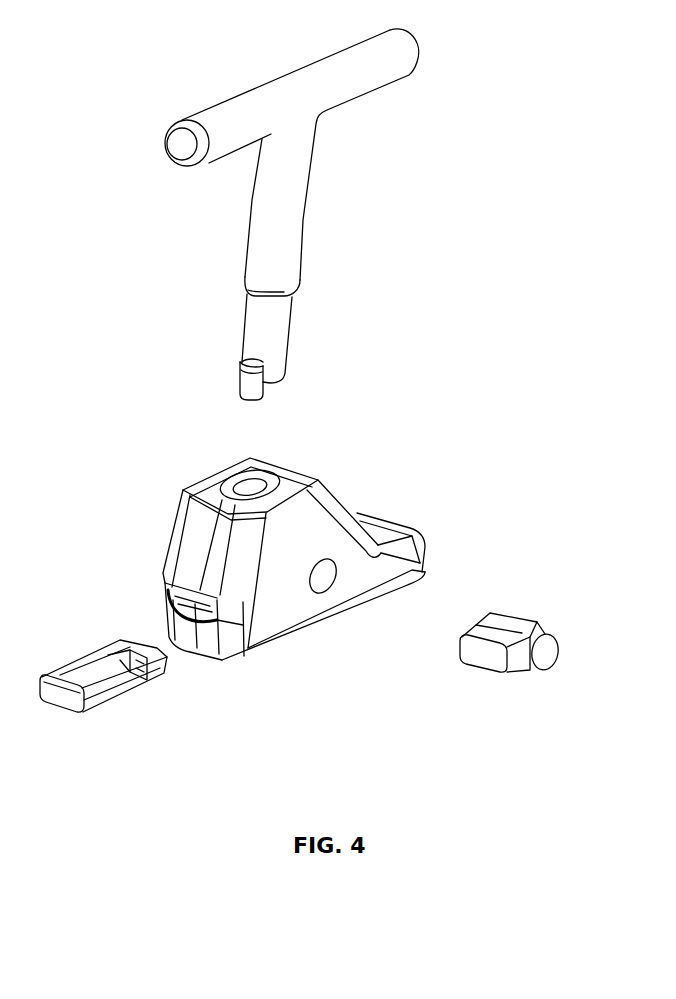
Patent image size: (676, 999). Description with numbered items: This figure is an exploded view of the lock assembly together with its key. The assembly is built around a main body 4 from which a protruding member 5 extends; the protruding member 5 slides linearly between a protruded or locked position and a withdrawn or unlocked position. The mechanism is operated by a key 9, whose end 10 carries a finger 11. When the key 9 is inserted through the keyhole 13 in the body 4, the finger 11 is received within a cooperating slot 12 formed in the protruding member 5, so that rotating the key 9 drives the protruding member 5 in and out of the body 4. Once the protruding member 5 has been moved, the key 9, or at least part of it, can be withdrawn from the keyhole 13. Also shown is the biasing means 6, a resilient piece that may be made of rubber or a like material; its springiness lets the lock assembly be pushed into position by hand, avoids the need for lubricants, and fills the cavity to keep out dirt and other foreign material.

The main body 4 is at (310, 527).
The protruding member 5 is at (108, 695).
The biasing means 6 is at (547, 652).
The key 9 is at (292, 183).
The end of the key 10 is at (260, 354).
The finger 11 is at (247, 383).
The slot 12 is at (158, 675).
The keyhole 13 is at (243, 485).